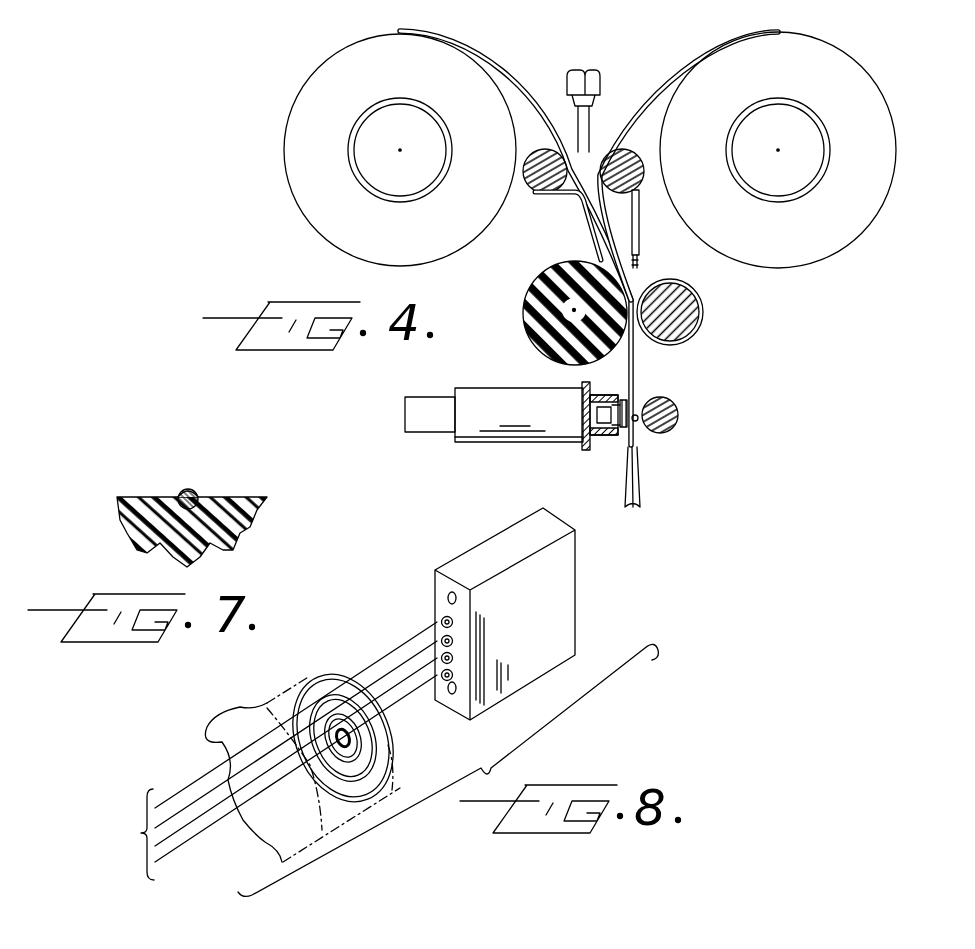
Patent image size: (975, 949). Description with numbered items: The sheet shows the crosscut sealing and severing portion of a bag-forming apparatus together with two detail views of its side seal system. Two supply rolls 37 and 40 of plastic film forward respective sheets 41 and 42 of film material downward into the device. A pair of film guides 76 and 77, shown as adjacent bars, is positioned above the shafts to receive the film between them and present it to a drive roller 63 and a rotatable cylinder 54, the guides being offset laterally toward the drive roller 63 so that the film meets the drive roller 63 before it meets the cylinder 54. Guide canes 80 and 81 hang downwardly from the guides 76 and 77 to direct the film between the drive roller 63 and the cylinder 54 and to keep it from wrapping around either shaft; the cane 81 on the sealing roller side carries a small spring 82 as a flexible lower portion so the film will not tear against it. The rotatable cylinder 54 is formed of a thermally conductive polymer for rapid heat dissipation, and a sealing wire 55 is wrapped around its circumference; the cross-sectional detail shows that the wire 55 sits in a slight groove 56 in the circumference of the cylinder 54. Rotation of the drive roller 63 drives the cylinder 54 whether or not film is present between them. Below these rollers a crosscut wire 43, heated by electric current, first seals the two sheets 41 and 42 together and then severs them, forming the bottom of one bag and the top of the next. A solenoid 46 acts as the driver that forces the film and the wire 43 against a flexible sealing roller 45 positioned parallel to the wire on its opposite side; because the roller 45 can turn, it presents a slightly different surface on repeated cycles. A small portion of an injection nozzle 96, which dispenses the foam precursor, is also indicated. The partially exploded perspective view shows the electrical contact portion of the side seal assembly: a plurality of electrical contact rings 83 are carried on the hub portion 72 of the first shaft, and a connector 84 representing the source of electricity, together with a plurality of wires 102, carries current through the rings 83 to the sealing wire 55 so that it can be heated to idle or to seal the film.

In FIG. 4, the supply roll 37 is at (358, 46).
In FIG. 4, the supply roll 40 is at (862, 80).
In FIG. 4, the sheet of plastic film material 41 is at (503, 67).
In FIG. 4, the sheet of plastic film material 42 is at (686, 55).
In FIG. 4, the crosscut wire 43 is at (640, 430).
In FIG. 4, the sealing roller 45 is at (673, 398).
In FIG. 4, the solenoid 46 is at (513, 397).
In FIG. 4, the rotatable cylinder 54 is at (703, 325).
In FIG. 7, the rotatable cylinder 54 is at (135, 503).
In FIG. 4, the sealing wire 55 is at (698, 285).
In FIG. 7, the sealing wire 55 is at (186, 492).
In FIG. 7, the groove 56 is at (200, 488).
In FIG. 4, the drive roller 63 is at (557, 278).
In FIG. 8, the hub portion 72 is at (303, 688).
In FIG. 4, the film guide 76 is at (525, 180).
In FIG. 4, the film guide 77 is at (640, 155).
In FIG. 4, the guide cane 80 is at (583, 223).
In FIG. 4, the guide cane 81 is at (645, 198).
In FIG. 4, the spring 82 is at (640, 258).
In FIG. 8, the electrical contact ring 83 is at (330, 677).
In FIG. 8, the connector 84 is at (503, 613).
In FIG. 4, the injection nozzle 96 is at (593, 70).
In FIG. 8, the wires 102 is at (143, 833).